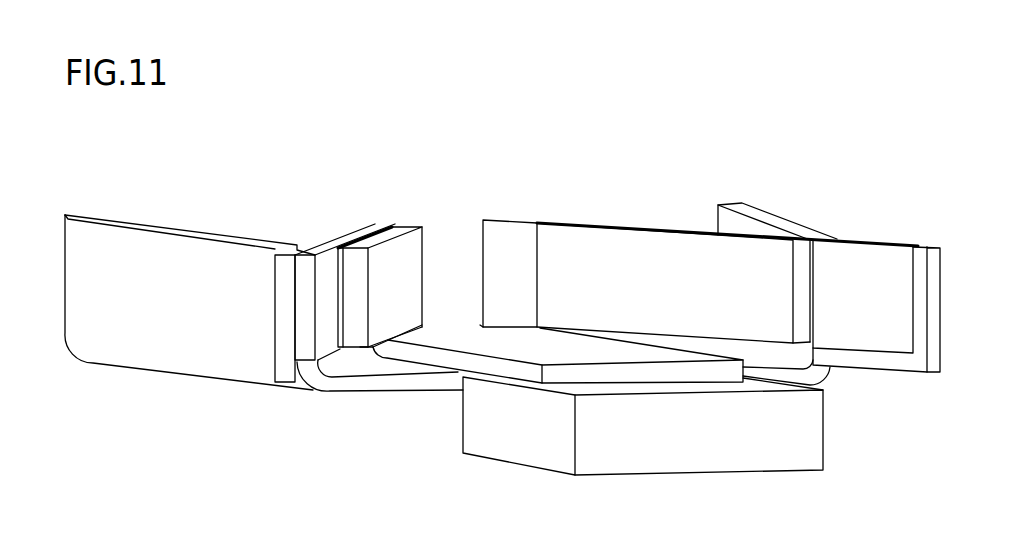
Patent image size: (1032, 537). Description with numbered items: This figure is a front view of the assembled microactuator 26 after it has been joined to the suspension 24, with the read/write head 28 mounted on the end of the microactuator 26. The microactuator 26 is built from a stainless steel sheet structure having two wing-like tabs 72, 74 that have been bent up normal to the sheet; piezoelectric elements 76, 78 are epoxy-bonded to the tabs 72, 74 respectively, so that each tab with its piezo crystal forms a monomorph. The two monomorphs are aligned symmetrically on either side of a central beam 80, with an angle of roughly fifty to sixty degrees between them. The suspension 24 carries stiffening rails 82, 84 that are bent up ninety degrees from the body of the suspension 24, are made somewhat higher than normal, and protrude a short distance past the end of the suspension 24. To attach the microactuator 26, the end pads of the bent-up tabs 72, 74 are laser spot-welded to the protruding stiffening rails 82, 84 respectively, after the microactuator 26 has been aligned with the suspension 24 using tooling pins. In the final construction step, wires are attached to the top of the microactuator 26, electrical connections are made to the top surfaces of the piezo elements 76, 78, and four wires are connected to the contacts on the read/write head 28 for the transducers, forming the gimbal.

The suspension 24 is at (383, 383).
The microactuator 26 is at (522, 135).
The head 28 is at (690, 455).
The bent-up tab 72 is at (330, 247).
The bent-up tab 74 is at (868, 260).
The piezoelectric element 76 is at (388, 232).
The piezoelectric element 78 is at (575, 237).
The central beam 80 is at (578, 373).
The stiffening rail 82 is at (138, 222).
The stiffening rail 84 is at (755, 215).